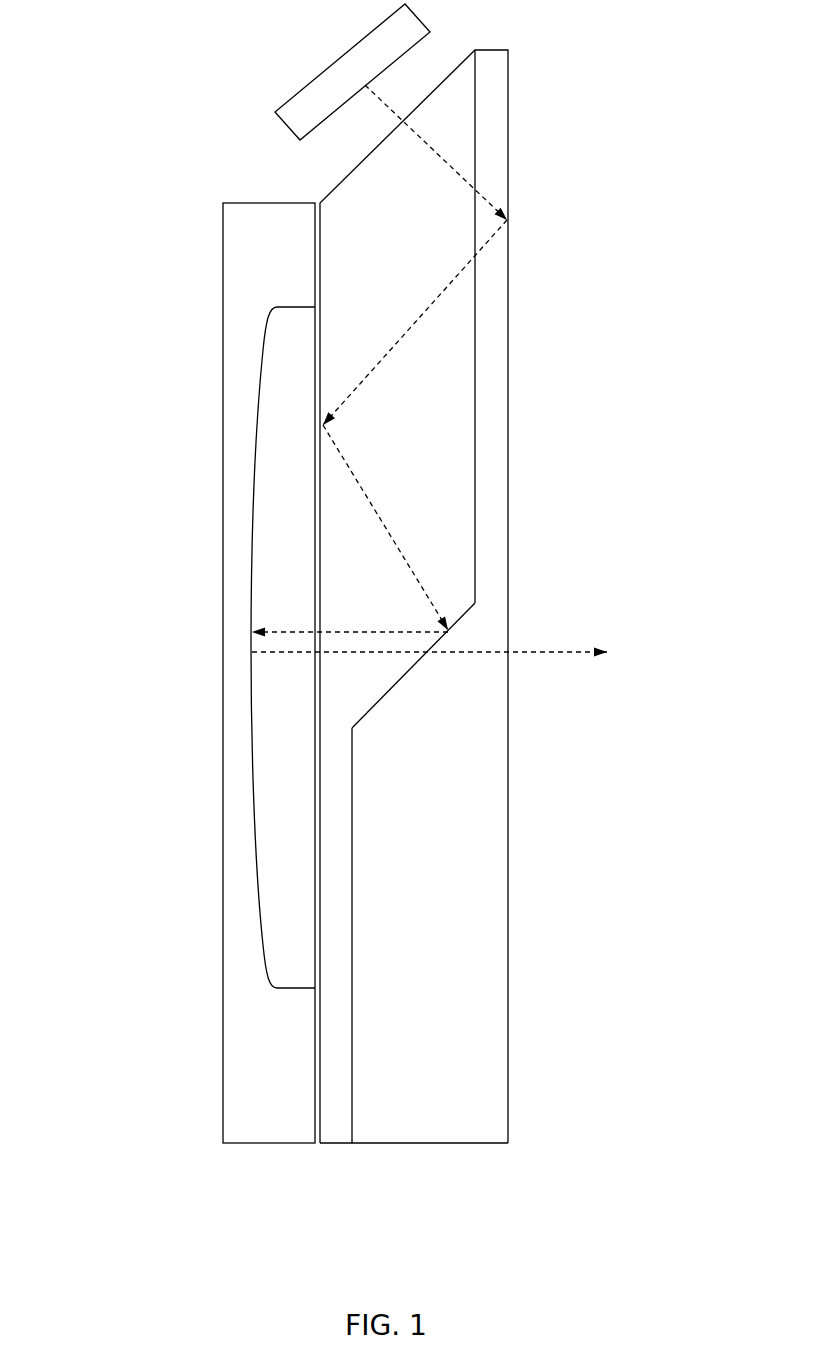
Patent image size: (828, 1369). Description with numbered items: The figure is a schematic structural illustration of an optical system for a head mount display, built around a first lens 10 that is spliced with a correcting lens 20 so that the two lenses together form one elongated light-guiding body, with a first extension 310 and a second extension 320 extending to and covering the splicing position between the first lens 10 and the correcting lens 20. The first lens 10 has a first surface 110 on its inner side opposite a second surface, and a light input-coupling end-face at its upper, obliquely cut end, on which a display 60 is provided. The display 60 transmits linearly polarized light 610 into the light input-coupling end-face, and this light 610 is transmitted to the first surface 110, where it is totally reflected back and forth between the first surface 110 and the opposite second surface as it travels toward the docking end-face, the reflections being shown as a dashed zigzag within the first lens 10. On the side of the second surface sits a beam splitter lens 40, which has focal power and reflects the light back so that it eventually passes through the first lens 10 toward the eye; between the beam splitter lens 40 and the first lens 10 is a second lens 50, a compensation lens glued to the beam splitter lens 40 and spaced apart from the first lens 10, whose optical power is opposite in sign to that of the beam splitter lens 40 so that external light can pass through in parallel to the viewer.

The first lens 10 is at (343, 205).
The correcting lens 20 is at (430, 1117).
The beam splitter lens 40 is at (248, 272).
The second lens 50 is at (265, 558).
The display 60 is at (372, 72).
The first surface 110 is at (477, 432).
The first extension 310 is at (493, 602).
The second extension 320 is at (340, 1130).
The light 610 is at (385, 98).